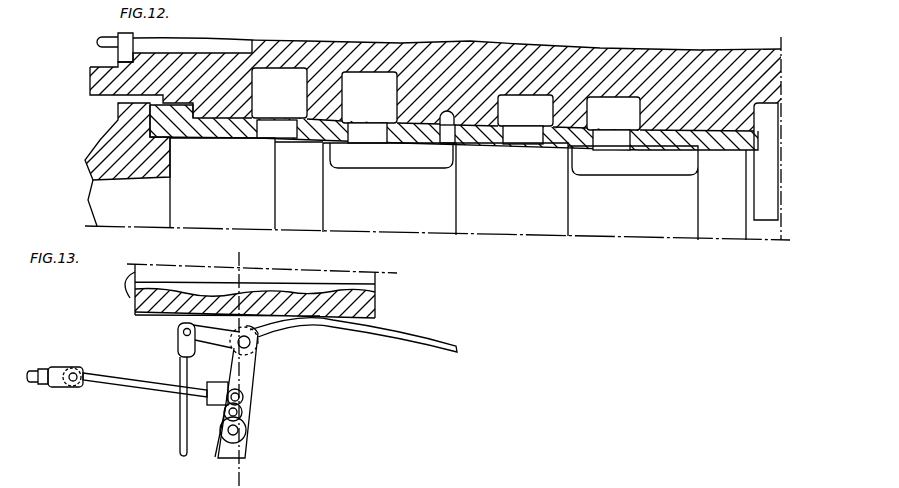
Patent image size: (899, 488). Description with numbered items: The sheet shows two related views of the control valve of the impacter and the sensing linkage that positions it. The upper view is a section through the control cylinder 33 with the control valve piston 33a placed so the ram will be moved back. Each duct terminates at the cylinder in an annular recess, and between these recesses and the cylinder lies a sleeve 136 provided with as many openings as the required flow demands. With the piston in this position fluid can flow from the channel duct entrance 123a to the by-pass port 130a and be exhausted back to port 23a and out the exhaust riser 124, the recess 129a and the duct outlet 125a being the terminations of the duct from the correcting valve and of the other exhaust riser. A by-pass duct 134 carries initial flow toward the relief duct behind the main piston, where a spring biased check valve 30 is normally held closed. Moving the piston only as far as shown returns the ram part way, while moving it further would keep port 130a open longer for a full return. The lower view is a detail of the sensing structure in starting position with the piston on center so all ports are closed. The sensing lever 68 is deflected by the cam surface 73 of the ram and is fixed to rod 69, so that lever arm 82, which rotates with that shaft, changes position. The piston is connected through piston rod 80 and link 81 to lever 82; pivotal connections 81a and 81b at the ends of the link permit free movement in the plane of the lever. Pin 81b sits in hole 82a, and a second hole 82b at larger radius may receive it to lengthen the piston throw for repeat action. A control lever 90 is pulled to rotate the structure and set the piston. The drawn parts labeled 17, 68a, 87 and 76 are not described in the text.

In FIG. 12, the by-pass duct 134 is at (224, 53).
In FIG. 12, the spring biased check valve 30 is at (133, 44).
In FIG. 12, the port 23a is at (277, 69).
In FIG. 12, the channel duct entrance 123a is at (386, 104).
In FIG. 12, the annular recess of duct 129 129a is at (542, 124).
In FIG. 12, the duct outlet 125a is at (632, 124).
In FIG. 12, the control cylinder 33 is at (227, 140).
In FIG. 12, the exhaust riser 124 is at (136, 176).
In FIG. 12, the by-pass port 130a is at (353, 108).
In FIG. 12, the control valve piston 33a is at (522, 218).
In FIG. 12, the sleeve 136 is at (755, 167).
In FIG. 12, the piston rod 80 is at (765, 236).
In FIG. 13, the piston rod 80 is at (32, 385).
In FIG. 13, the frame 17 is at (341, 283).
In FIG. 13, the cam surface 73 is at (160, 305).
In FIG. 13, the sensing lever 68 is at (421, 335).
In FIG. 13, the link 68a is at (216, 341).
In FIG. 13, the rod/shaft 69 is at (252, 341).
In FIG. 13, the lever arm 82 is at (255, 375).
In FIG. 13, the hole 82a is at (243, 397).
In FIG. 13, the hole 82b is at (242, 412).
In FIG. 13, the control lever 90 is at (244, 443).
In FIG. 13, the bracket 87 is at (229, 452).
In FIG. 13, the rod 76 is at (180, 426).
In FIG. 13, the link 81 is at (128, 384).
In FIG. 13, the pin 81b is at (212, 401).
In FIG. 13, the pivotal connection 81a is at (112, 361).